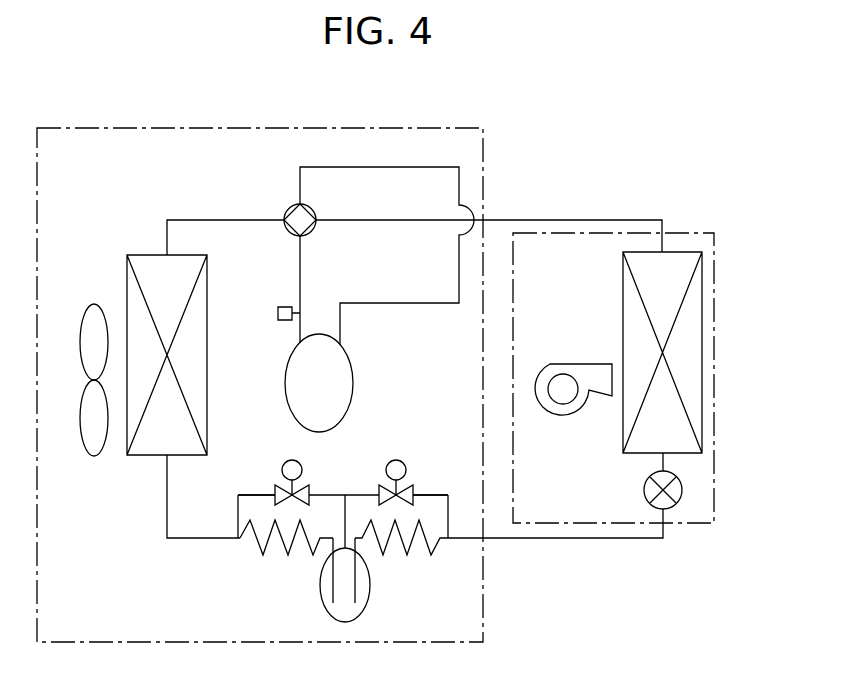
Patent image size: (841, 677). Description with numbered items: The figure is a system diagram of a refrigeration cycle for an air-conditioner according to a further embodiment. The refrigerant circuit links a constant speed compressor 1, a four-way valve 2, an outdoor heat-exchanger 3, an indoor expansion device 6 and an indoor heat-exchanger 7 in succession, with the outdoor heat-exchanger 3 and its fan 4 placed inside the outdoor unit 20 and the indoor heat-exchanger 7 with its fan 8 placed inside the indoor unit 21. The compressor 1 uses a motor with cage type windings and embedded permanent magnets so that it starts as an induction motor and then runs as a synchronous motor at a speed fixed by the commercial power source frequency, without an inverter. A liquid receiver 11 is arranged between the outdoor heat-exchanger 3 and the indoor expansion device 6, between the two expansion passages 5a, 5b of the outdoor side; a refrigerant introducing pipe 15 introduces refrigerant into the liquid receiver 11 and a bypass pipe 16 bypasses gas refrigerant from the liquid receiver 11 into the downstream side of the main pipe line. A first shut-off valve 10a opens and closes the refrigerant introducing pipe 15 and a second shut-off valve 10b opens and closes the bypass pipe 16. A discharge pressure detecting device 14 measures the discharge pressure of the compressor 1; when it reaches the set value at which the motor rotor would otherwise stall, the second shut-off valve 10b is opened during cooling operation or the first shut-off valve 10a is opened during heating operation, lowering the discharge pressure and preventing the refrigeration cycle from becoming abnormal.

The constant speed compressor 1 is at (290, 427).
The four-way valve 2 is at (288, 210).
The outdoor heat-exchanger 3 is at (208, 313).
The outdoor fan 4 is at (90, 305).
The first capillary tube 5a is at (255, 533).
The second capillary tube 5b is at (396, 542).
The indoor expansion device 6 is at (645, 495).
The indoor heat-exchanger 7 is at (623, 308).
The indoor fan 8 is at (580, 366).
The first shut-off valve 10a is at (302, 468).
The second shut-off valve 10b is at (405, 463).
The liquid receiver 11 is at (320, 578).
The discharge pressure detecting device 14 is at (283, 321).
The refrigerant introducing pipe 15 is at (250, 495).
The bypass pipe 16 is at (414, 492).
The outdoor unit 20 is at (355, 128).
The indoor unit 21 is at (678, 232).